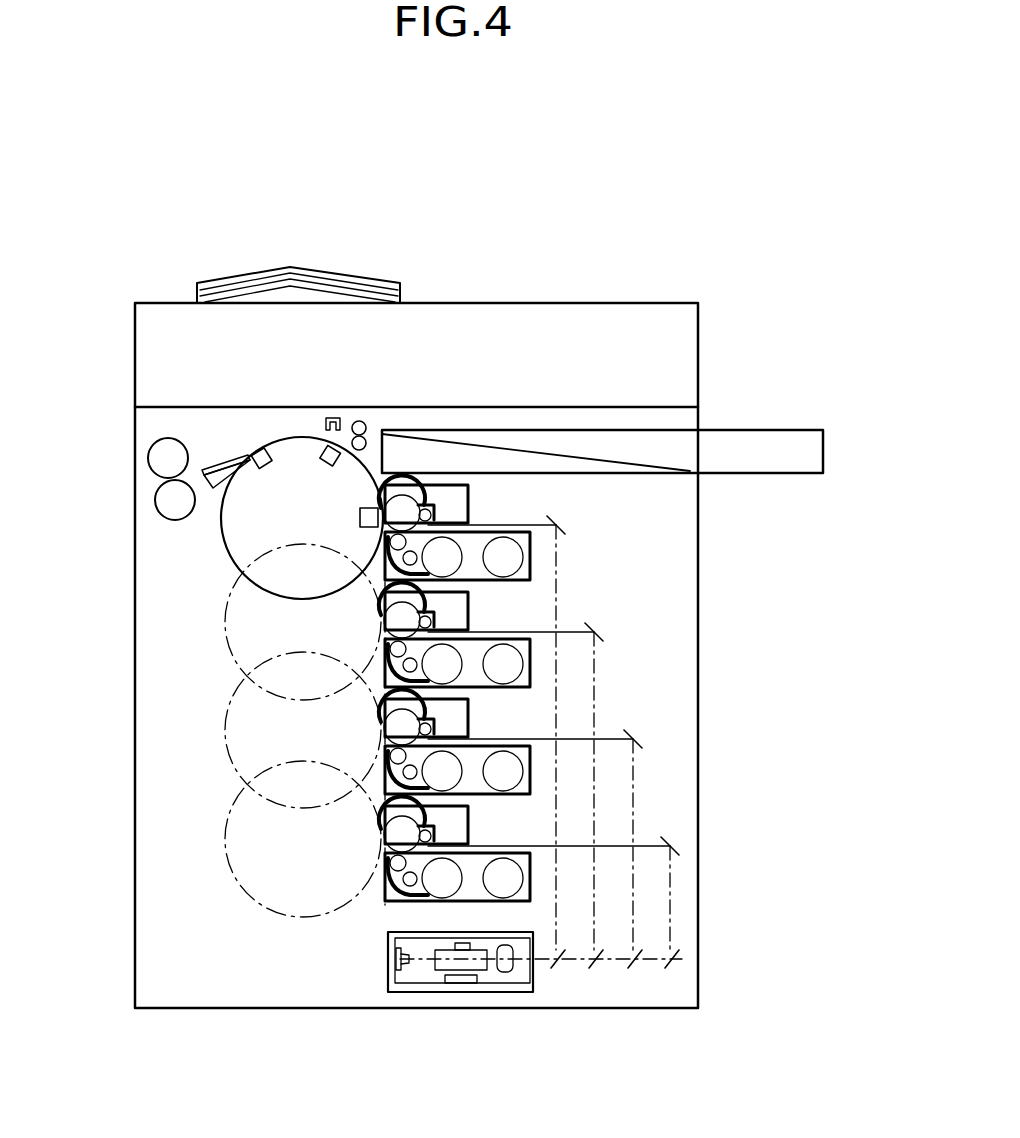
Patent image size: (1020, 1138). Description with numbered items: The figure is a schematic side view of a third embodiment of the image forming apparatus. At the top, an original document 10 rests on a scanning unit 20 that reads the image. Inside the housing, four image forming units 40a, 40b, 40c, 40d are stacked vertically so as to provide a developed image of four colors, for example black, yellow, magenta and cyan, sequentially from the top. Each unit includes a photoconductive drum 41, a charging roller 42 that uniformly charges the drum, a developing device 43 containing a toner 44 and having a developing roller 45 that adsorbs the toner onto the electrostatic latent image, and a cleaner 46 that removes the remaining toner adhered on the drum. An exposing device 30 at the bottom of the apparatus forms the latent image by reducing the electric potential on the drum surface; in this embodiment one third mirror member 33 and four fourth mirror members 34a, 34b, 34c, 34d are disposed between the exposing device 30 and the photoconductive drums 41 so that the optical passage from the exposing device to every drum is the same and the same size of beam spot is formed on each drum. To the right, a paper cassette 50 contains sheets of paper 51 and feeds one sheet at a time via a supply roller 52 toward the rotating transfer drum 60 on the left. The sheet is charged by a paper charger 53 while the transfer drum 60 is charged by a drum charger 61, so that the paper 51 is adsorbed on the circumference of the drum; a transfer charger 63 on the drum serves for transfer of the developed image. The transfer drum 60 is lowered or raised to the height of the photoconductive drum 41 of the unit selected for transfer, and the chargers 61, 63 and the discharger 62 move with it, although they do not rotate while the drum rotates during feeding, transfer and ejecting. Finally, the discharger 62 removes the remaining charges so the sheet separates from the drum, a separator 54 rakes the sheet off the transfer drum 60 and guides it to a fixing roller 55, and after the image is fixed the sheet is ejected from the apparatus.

The original document 10 is at (362, 270).
The scanning unit 20 is at (704, 343).
The exposing device 30 is at (473, 994).
The third mirror member 33 is at (557, 964).
The fourth mirror member 34a is at (565, 530).
The fourth mirror member 34b is at (603, 637).
The fourth mirror member 34c is at (642, 744).
The fourth mirror member 34d is at (679, 851).
The image forming unit 40a is at (383, 578).
The image forming unit 40b is at (383, 685).
The image forming unit 40c is at (383, 792).
The image forming unit 40d is at (395, 908).
The photoconductive drum 41 is at (404, 512).
The charging roller 42 is at (427, 512).
The developing device 43 is at (531, 570).
The toner 44 is at (477, 566).
The developing roller 45 is at (392, 546).
The cleaner 46 is at (468, 502).
The paper cassette 50 is at (830, 442).
The paper 51 is at (533, 452).
The supply roller 52 is at (360, 421).
The paper charger 53 is at (332, 418).
The separator 54 is at (220, 470).
The fixing roller 55 is at (157, 452).
The transfer drum 60 is at (226, 536).
The drum charger 61 is at (327, 448).
The discharger 62 is at (263, 452).
The transfer charger 63 is at (360, 515).